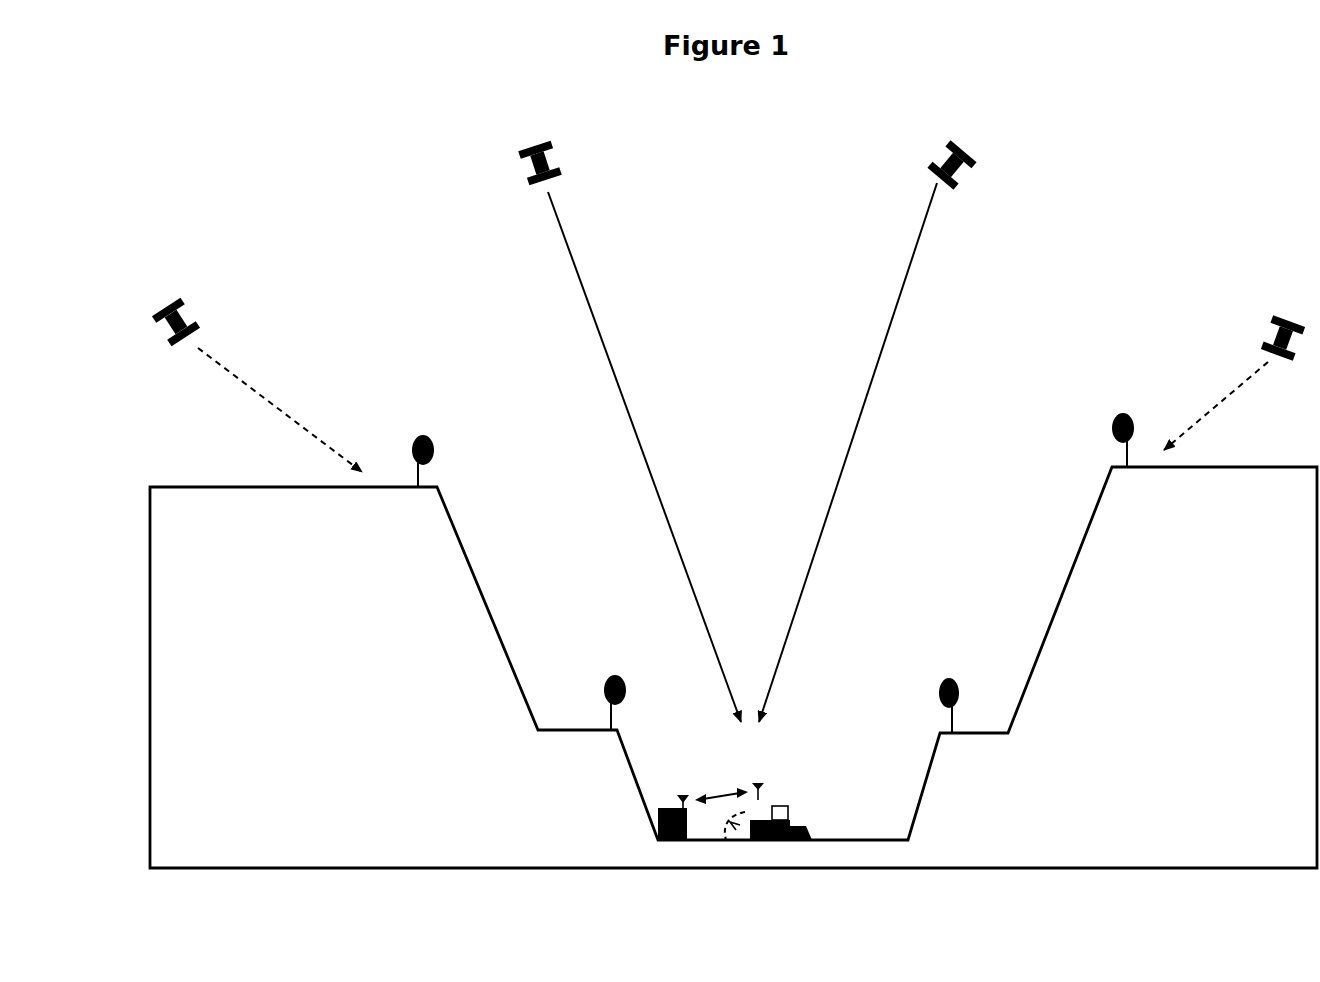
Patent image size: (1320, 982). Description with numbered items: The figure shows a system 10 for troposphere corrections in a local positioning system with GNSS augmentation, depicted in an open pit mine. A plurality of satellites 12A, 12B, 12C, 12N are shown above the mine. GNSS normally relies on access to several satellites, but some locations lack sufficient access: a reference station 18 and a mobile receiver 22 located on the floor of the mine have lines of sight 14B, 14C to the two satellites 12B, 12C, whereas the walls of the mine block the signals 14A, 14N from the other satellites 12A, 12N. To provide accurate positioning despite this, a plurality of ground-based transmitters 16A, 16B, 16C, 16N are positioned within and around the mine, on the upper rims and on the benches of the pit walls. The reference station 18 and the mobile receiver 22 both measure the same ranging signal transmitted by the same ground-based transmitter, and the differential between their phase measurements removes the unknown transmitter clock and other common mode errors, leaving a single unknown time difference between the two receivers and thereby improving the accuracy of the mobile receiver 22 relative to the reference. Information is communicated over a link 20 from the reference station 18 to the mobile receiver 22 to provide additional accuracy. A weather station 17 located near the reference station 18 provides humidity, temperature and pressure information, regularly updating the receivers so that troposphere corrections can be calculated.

The system 10 is at (337, 214).
The satellite 12A is at (197, 312).
The satellite 12B is at (562, 163).
The satellite 12C is at (936, 160).
The satellite 12N is at (1268, 333).
The line of sight 14A is at (259, 393).
The line of sight 14B is at (602, 330).
The line of sight 14C is at (889, 326).
The line of sight 14N is at (1219, 403).
The ground-based transmitter 16A is at (432, 442).
The ground-based transmitter 16B is at (625, 680).
The ground-based transmitter 16C is at (940, 688).
The ground-based transmitter 16N is at (1110, 424).
The weather station 17 is at (667, 808).
The reference station 18 is at (657, 830).
The link 20 is at (718, 793).
The mobile receiver 22 is at (782, 810).